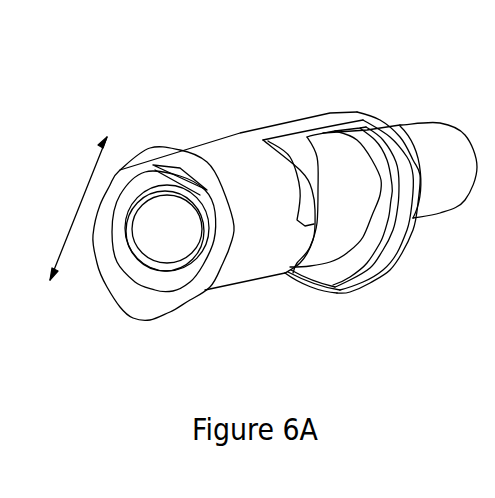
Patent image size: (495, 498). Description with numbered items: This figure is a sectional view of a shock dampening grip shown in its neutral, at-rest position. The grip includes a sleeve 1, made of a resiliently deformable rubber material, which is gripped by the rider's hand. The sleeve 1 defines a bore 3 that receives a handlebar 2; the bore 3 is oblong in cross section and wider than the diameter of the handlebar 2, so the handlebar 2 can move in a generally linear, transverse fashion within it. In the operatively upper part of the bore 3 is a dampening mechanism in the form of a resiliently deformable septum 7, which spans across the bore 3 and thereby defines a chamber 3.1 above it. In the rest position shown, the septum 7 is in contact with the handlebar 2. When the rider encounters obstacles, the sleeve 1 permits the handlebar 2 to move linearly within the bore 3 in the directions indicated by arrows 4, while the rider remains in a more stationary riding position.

The sleeve 1 is at (256, 216).
The handlebar 2 is at (427, 135).
The bore 3 is at (147, 273).
The chamber 3.1 is at (183, 176).
The arrows 4 is at (78, 208).
The septum 7 is at (186, 185).